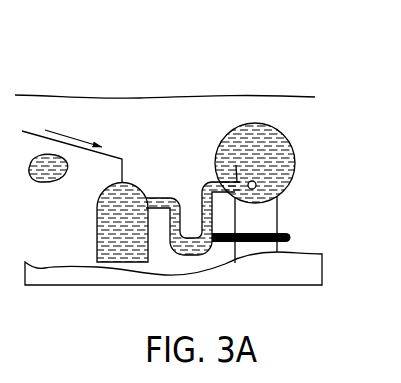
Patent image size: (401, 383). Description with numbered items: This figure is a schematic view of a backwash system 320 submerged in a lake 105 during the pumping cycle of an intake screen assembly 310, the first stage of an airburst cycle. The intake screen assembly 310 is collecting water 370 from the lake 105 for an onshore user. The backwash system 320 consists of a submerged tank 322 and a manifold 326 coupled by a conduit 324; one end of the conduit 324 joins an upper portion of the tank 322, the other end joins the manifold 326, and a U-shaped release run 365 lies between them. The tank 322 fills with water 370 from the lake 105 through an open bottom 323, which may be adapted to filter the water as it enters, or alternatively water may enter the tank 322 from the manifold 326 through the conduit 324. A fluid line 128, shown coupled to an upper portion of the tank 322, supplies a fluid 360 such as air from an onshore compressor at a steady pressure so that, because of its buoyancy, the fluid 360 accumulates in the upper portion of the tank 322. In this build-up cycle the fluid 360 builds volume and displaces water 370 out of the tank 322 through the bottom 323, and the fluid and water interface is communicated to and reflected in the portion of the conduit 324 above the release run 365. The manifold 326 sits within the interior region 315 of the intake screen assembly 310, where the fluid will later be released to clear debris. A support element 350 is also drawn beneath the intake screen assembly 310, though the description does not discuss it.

The backwash system 320 is at (107, 43).
The lake 105 is at (148, 133).
The fluid line 128 is at (32, 123).
The fluid 360 is at (73, 126).
The tank 322 is at (97, 218).
The water 370 is at (107, 245).
The conduit 324 is at (162, 188).
The release run 365 is at (194, 254).
The intake screen assembly 310 is at (306, 164).
The interior region 315 is at (255, 138).
The manifold 326 is at (236, 165).
The support post 350 is at (278, 213).
The bottom 323 is at (112, 265).